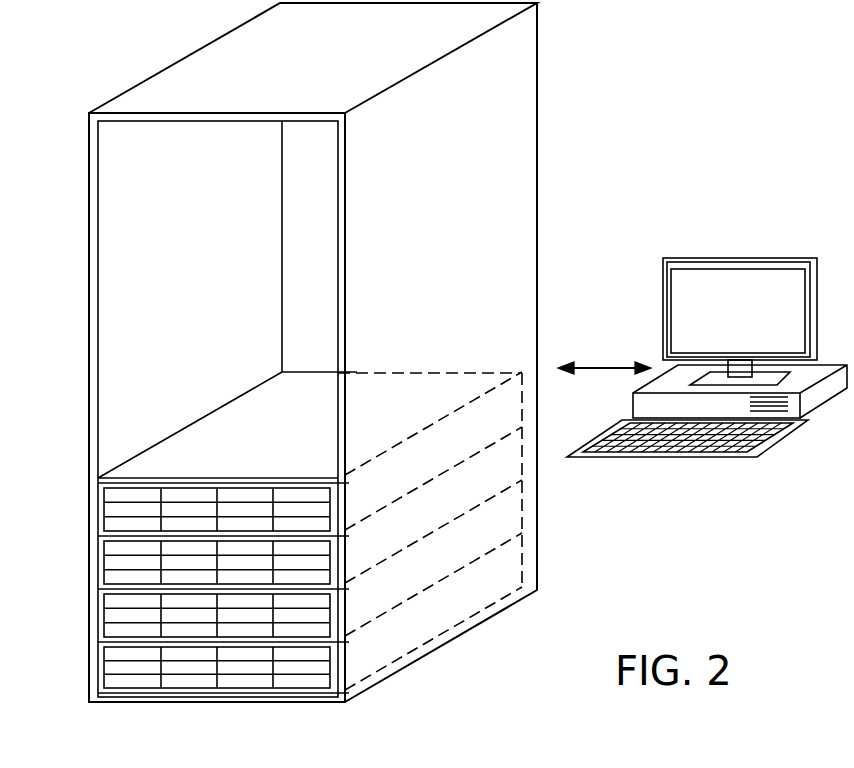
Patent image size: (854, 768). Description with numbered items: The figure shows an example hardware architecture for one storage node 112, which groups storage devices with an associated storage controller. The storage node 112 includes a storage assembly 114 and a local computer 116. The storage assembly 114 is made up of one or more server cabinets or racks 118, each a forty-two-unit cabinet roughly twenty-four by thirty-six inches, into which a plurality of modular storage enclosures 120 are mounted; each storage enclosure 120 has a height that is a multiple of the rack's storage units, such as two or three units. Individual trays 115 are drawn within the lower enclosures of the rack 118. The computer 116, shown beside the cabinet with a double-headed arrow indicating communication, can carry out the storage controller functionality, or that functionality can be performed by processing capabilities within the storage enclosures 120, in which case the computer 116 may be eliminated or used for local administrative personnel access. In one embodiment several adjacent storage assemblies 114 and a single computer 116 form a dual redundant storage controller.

The storage node 112 is at (682, 95).
The storage assembly 114 is at (229, 68).
The tray 115 is at (140, 682).
The computer 116 is at (764, 255).
The server cabinet 118 is at (88, 352).
The storage enclosure 120 is at (269, 432).